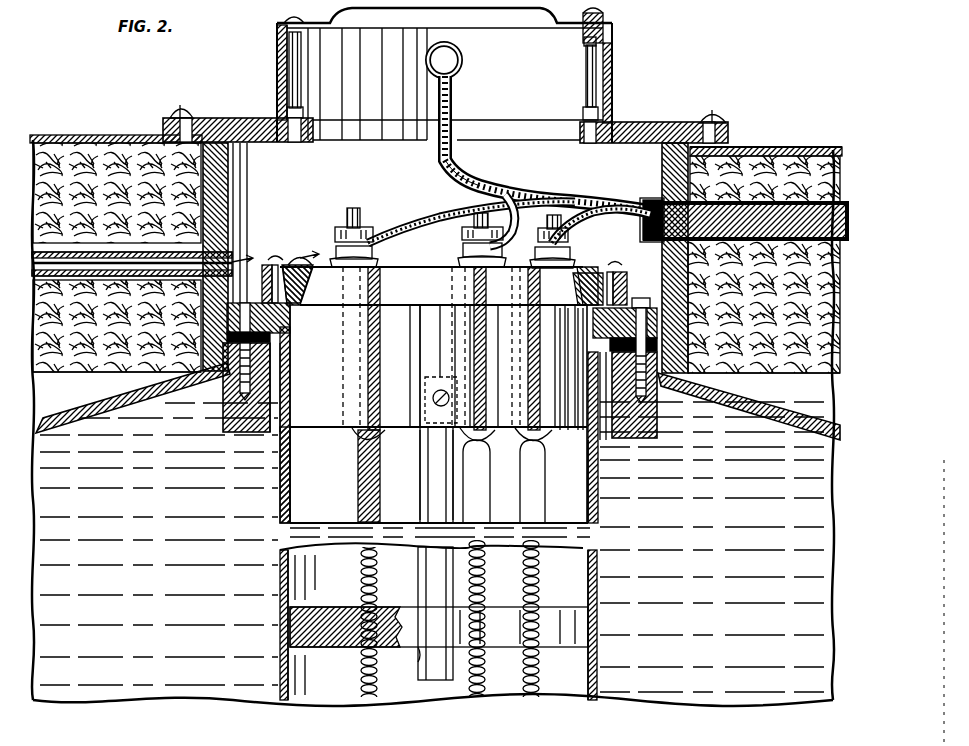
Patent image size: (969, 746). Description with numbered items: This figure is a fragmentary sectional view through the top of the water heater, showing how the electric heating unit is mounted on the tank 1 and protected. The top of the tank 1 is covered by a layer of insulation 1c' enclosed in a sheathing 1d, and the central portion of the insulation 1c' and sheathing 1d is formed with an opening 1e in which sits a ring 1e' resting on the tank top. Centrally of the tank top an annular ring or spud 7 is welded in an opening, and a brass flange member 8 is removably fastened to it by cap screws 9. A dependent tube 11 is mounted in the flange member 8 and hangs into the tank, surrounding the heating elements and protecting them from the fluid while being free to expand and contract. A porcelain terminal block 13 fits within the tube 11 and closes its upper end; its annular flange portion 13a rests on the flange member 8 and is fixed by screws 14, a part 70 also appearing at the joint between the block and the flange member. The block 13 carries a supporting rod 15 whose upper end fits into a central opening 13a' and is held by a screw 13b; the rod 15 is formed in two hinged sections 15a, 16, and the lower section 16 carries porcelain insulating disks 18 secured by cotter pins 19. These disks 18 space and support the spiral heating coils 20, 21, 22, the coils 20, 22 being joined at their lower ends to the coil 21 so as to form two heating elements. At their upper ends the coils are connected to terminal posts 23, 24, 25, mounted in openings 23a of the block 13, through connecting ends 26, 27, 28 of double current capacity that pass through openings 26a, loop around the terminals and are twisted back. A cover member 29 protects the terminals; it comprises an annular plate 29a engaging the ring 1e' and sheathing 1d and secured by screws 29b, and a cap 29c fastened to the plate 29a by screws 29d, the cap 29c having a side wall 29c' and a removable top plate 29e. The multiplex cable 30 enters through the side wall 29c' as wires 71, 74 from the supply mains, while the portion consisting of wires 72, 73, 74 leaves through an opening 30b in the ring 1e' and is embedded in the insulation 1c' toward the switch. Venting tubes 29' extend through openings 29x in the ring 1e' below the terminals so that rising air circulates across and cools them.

The tank 1 is at (72, 425).
The insulation layer 1c' is at (764, 241).
The sheathing 1d is at (760, 148).
The opening 1e is at (749, 291).
The ring 1e' is at (237, 257).
The annular ring or spud 7 is at (243, 428).
The flange member 8 is at (288, 342).
The cap screws 9 is at (280, 388).
The dependent tube 11 is at (600, 512).
The terminal block 13 is at (333, 422).
The annular flange portion 13a is at (443, 318).
The opening 13a' is at (401, 366).
The screw 13b is at (433, 400).
The screws 14 is at (274, 262).
The supporting rod 15 is at (426, 478).
The rod section 15a is at (425, 495).
The rod section 16 is at (426, 583).
The insulating disks 18 is at (333, 645).
The cotter pins 19 is at (418, 650).
The heating coil 20 is at (358, 578).
The heating coil 21 is at (487, 583).
The heating coil 22 is at (541, 576).
The terminal post 23 is at (357, 208).
The openings 23a is at (343, 367).
The terminal post 24 is at (462, 233).
The terminal post 25 is at (540, 232).
The connecting end 26 is at (380, 442).
The openings 26a is at (380, 346).
The connecting end 27 is at (488, 448).
The connecting end 28 is at (548, 448).
The cover member 29 is at (445, 116).
The venting tubes 29' is at (117, 269).
The annular plate 29a is at (300, 106).
The screws 29b is at (182, 110).
The cap 29c is at (462, 75).
The side wall 29c' is at (438, 72).
The screws 29d is at (590, 107).
The plate 29e is at (545, 30).
The openings 29x is at (233, 238).
The multiplex cable 30 is at (462, 64).
The opening 30b is at (648, 198).
The packing block 70 is at (285, 330).
The wire 71 is at (470, 178).
The wire 72 is at (425, 222).
The wire 73 is at (590, 270).
The wire 74 is at (527, 183).